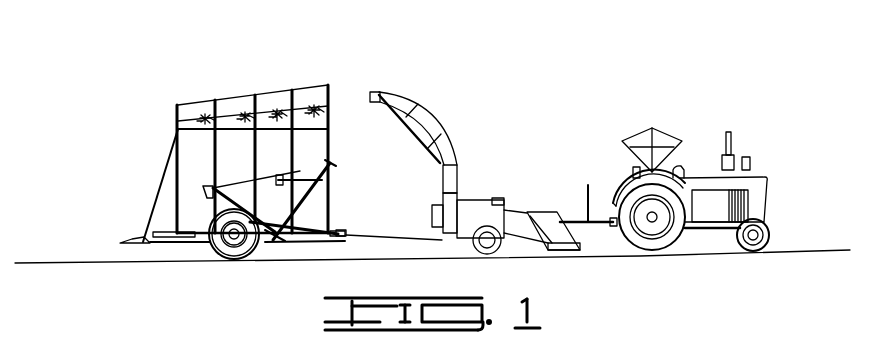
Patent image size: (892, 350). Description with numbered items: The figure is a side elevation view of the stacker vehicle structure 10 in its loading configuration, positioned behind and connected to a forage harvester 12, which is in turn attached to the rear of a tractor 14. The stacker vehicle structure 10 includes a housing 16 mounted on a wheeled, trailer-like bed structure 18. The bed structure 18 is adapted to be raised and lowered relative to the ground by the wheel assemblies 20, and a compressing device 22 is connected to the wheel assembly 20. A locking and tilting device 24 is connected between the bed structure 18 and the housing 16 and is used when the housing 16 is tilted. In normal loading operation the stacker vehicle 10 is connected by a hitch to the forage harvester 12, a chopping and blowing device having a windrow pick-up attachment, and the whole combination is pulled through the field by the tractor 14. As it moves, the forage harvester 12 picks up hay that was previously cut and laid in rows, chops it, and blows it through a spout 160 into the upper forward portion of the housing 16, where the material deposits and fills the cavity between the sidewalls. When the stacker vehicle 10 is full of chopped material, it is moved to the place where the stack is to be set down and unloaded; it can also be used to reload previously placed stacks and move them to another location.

The stacker vehicle structure 10 is at (232, 86).
The forage harvester 12 is at (450, 78).
The tractor 14 is at (746, 103).
The housing 16 is at (165, 99).
The spout 160 is at (393, 100).
The bed structure 18 is at (95, 243).
The wheel assemblies 20 is at (218, 272).
The compressing device 22 is at (203, 197).
The locking and tilting device 24 is at (346, 171).